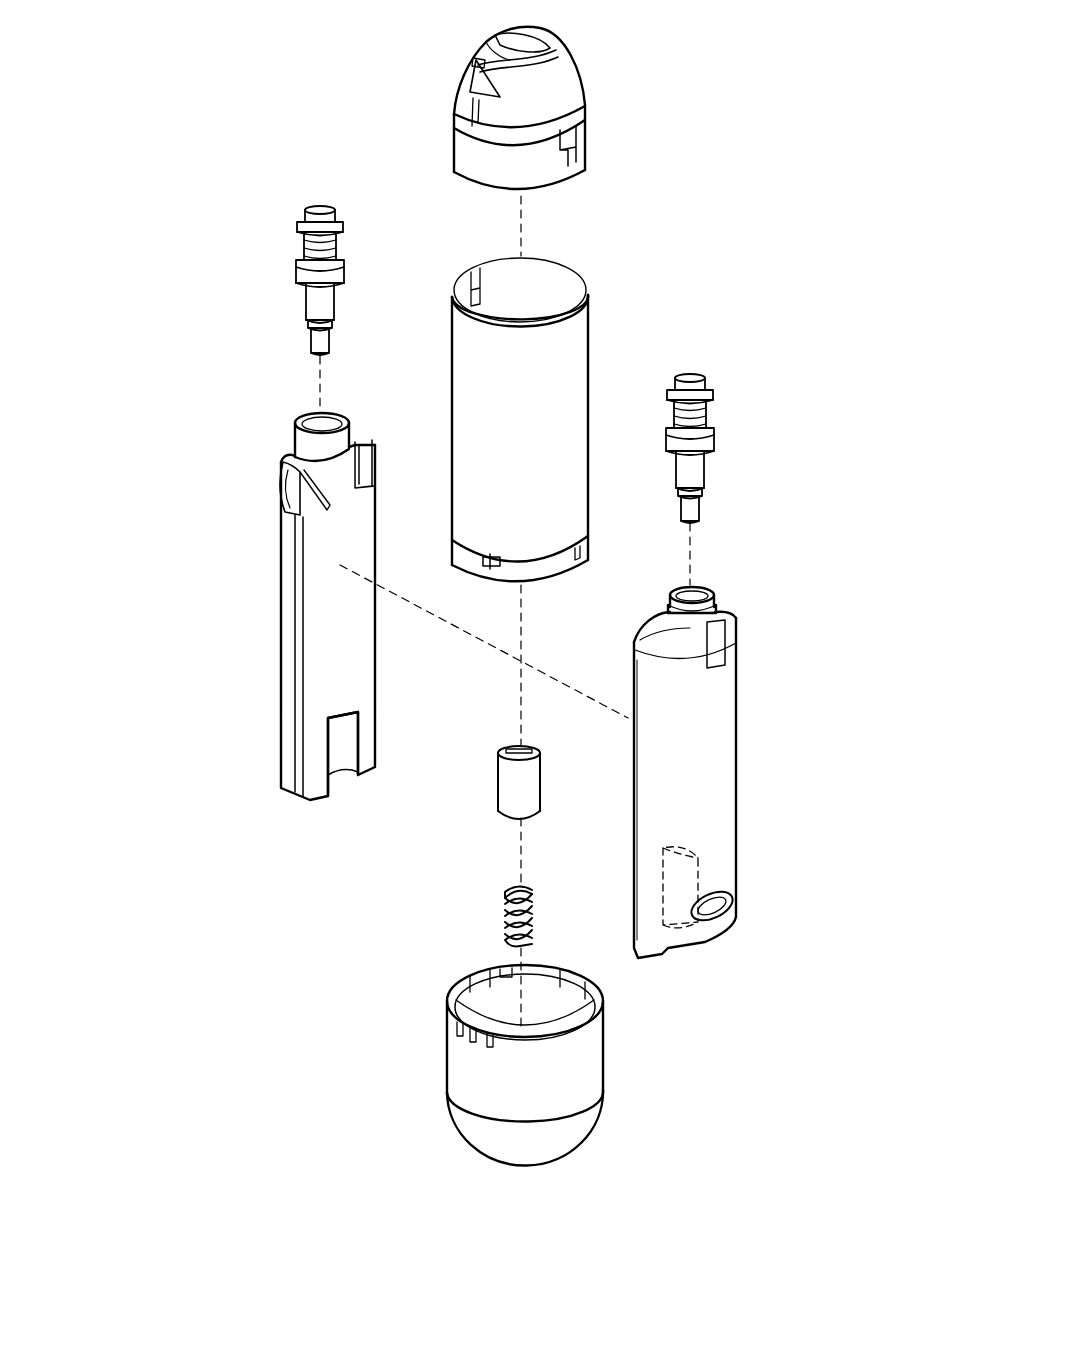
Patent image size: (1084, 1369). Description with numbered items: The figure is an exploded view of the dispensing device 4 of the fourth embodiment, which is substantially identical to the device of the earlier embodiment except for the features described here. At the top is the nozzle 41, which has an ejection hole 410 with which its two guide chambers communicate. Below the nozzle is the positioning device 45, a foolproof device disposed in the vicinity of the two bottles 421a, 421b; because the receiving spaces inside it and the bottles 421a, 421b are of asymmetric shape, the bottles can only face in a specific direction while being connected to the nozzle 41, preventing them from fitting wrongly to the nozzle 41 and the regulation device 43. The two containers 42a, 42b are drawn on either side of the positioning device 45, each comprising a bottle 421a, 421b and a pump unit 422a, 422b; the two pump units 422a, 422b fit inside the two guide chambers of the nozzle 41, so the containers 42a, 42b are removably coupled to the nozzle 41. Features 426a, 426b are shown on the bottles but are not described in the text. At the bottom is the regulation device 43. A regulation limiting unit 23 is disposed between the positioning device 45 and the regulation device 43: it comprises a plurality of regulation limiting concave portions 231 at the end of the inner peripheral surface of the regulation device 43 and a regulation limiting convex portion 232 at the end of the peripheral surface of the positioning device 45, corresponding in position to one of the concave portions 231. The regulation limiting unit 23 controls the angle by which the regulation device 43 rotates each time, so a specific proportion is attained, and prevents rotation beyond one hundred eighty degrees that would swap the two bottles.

The dispensing device 4 is at (157, 30).
The nozzle 41 is at (506, 105).
The ejection hole 410 is at (473, 64).
The positioning device 45 is at (556, 387).
The regulation limiting unit 23 is at (433, 773).
The regulation limiting convex portion 232 is at (488, 564).
The regulation limiting concave portions 231 is at (462, 1033).
The container 42a is at (840, 441).
The bottle 421a is at (705, 767).
The pump unit 422a is at (716, 474).
The first positioning recess 426a is at (718, 866).
The container 42b is at (158, 275).
The bottle 421b is at (292, 602).
The pump unit 422b is at (318, 308).
The second positioning recess 426b is at (340, 748).
The regulation device 43 is at (636, 1050).